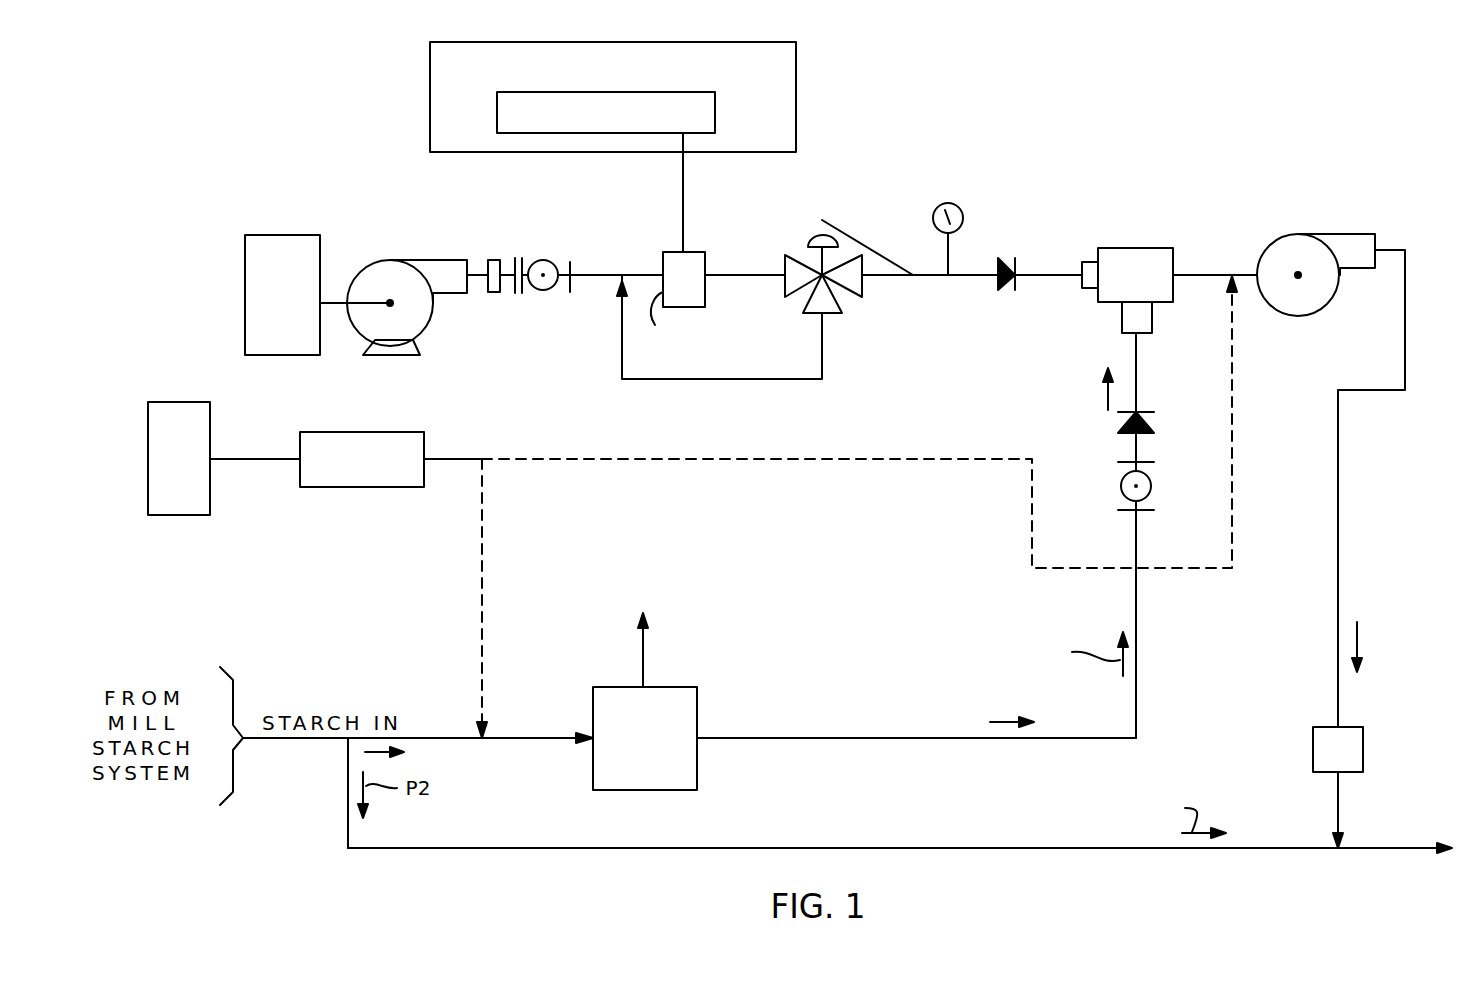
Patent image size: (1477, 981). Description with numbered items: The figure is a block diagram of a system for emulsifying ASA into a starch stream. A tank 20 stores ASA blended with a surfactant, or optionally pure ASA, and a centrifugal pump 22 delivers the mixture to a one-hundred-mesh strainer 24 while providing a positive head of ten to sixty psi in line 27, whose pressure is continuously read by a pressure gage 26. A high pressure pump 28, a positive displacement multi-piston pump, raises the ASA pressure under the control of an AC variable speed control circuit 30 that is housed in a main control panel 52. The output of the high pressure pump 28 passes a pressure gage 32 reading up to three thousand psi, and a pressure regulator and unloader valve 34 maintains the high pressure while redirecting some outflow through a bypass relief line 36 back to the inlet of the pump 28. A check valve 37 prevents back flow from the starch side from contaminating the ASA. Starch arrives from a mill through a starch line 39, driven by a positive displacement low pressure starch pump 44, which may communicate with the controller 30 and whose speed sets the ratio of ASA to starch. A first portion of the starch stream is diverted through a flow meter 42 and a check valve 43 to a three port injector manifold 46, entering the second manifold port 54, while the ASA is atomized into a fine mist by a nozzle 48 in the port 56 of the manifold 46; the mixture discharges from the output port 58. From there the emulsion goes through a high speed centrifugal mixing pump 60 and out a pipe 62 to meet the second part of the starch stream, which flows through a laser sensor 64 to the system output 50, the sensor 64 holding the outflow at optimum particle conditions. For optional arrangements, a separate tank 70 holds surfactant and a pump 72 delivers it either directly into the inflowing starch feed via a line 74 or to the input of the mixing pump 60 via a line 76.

The tank 20 is at (317, 283).
The centrifugal pump 22 is at (437, 327).
The strainer 24 is at (492, 260).
The pressure gage 26 is at (548, 291).
The line 27 is at (510, 272).
The high pressure pump 28 is at (705, 290).
The AC variable speed control circuit 30 is at (715, 112).
The pressure gage 32 is at (950, 204).
The pressure regulator and unloader valve 34 is at (788, 246).
The bypass relief line 36 is at (748, 379).
The check valve 37 is at (1005, 292).
The starch line 39 is at (877, 738).
The flow meter 42 is at (1152, 486).
The check valve 43 is at (1117, 422).
The starch pump 44 is at (697, 712).
The three port injector manifold 46 is at (1155, 232).
The nozzle 48 is at (1082, 262).
The output pipe 50 is at (1415, 847).
The main control panel 52 is at (796, 115).
The manifold port 54 is at (1152, 320).
The port with high pressure spray nozzle 56 is at (1107, 263).
The output port 58 is at (1175, 258).
The high speed centrifugal mixing pump 60 is at (1345, 234).
The pipe 62 is at (1338, 568).
The laser sensor 64 is at (1313, 752).
The tank 70 is at (199, 445).
The pump 72 is at (378, 487).
The line 74 is at (482, 630).
The line 76 is at (1232, 425).